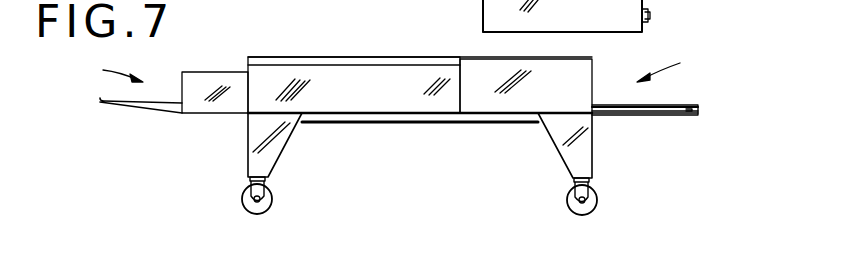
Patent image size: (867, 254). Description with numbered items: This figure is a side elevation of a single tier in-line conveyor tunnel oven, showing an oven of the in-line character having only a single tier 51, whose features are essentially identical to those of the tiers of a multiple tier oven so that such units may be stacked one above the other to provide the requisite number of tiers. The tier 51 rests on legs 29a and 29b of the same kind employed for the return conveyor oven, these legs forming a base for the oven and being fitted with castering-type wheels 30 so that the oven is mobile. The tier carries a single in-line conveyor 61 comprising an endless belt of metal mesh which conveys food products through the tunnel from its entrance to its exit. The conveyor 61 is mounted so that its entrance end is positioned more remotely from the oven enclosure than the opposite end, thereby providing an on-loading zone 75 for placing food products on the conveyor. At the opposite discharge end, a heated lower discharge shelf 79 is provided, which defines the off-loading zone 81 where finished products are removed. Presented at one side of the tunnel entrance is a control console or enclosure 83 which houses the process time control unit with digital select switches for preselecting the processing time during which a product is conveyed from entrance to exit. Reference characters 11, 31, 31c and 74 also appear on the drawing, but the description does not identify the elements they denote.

The apparatus 11 is at (420, 28).
The housing 31 is at (566, 16).
The housing portion 31c is at (435, 16).
The front compartment 74 is at (222, 50).
The lower discharge shelf 79 is at (150, 113).
The off-loading zone 81 is at (104, 70).
The leg 29a is at (292, 141).
The leg 29b is at (592, 152).
The castering-type wheels 30 is at (272, 200).
The single tier 51 is at (523, 59).
The control console 83 is at (648, 4).
The on-loading zone 75 is at (671, 59).
The in-line conveyor 61 is at (682, 107).